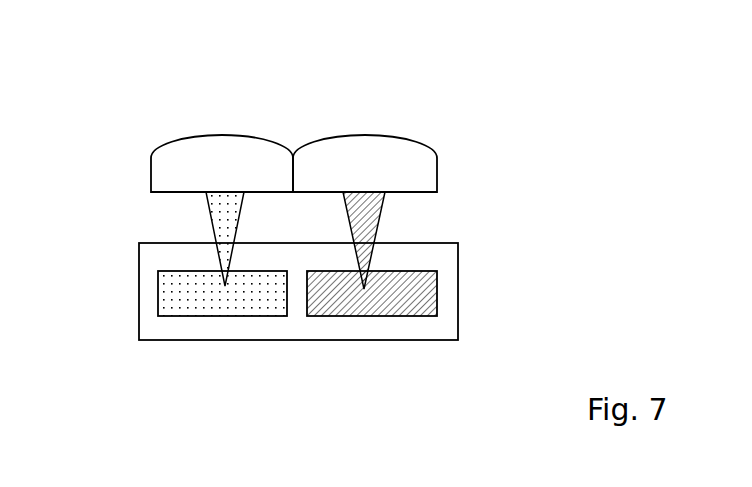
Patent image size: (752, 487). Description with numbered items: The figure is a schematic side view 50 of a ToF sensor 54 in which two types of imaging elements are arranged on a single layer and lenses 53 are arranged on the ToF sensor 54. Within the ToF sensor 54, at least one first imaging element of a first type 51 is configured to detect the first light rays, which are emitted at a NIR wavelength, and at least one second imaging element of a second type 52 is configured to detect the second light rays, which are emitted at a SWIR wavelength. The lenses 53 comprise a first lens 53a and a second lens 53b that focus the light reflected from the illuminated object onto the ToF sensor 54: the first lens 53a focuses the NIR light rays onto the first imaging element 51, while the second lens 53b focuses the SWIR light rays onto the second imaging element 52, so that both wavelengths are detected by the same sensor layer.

The side view 50 is at (228, 64).
The first imaging element of a first type 51 is at (158, 295).
The second imaging element of a second type 52 is at (437, 281).
The lenses 53 is at (296, 195).
The first lens 53a is at (151, 158).
The second lens 53b is at (390, 135).
The ToF sensor 54 is at (460, 296).